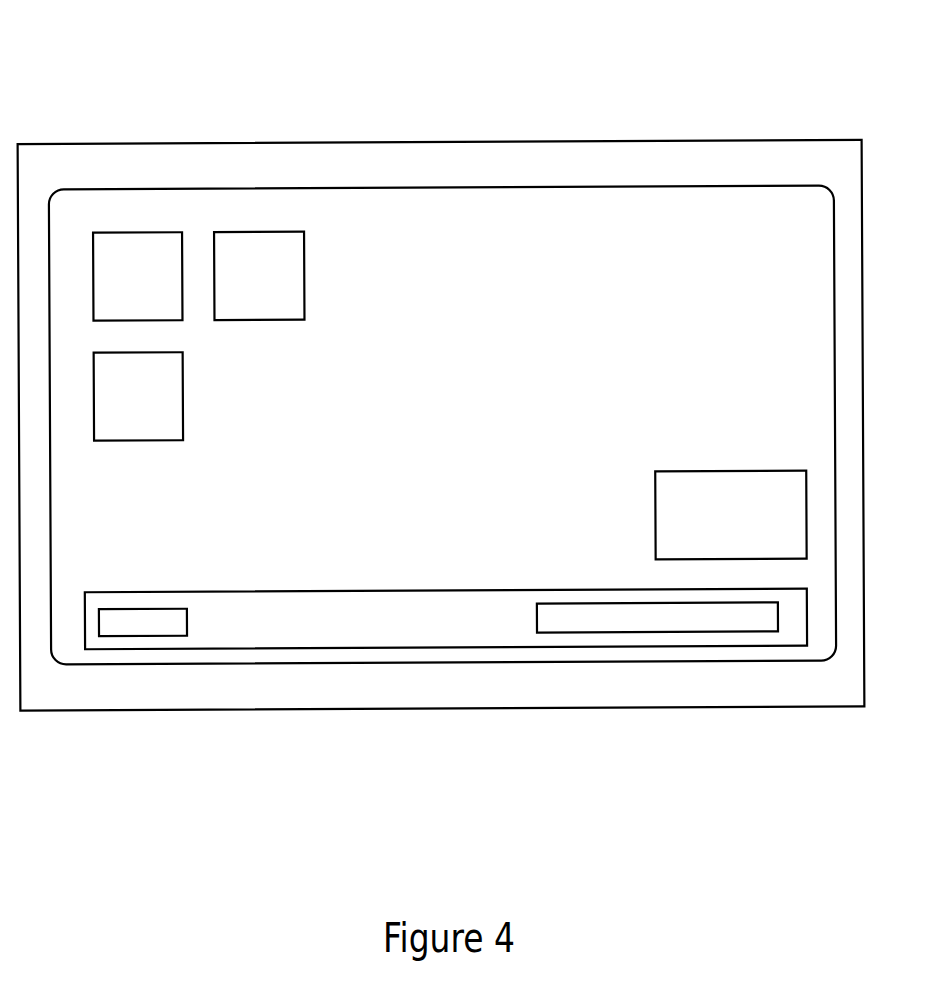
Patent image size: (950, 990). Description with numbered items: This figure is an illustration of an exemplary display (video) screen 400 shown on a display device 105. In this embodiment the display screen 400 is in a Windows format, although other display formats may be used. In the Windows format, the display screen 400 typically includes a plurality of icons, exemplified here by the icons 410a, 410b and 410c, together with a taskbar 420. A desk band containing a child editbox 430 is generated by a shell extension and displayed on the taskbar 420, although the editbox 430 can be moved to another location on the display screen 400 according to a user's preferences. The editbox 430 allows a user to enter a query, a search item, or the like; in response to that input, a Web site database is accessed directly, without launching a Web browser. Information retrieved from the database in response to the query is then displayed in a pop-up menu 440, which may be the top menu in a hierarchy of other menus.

The display device 105 is at (93, 54).
The display screen 400 is at (455, 424).
The icon 410a is at (160, 290).
The icon 410b is at (282, 290).
The icon 410c is at (160, 406).
The taskbar 420 is at (318, 658).
The editbox 430 is at (647, 640).
The pop-up menu 440 is at (740, 522).